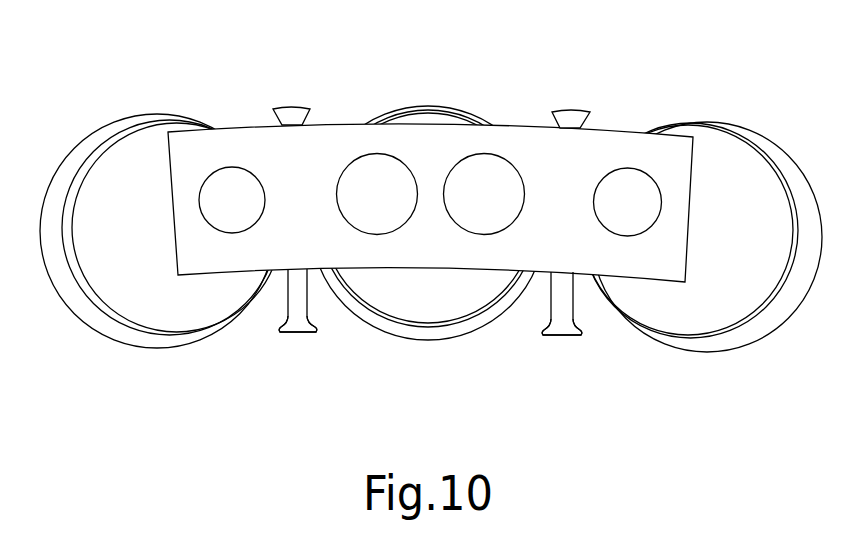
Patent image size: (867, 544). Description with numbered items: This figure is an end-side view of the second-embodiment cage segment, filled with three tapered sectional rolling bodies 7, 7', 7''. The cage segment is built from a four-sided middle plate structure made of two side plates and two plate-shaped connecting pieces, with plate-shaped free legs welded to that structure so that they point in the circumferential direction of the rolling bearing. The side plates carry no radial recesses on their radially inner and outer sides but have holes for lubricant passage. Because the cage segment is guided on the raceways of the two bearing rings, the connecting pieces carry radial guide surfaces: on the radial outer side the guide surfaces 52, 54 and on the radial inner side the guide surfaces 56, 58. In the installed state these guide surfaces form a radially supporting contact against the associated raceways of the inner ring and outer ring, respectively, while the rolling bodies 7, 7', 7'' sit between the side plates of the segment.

The tapered sectional rolling body 7 is at (428, 263).
The tapered sectional rolling body 7' is at (160, 265).
The tapered sectional rolling body 7'' is at (702, 271).
The radial guide surface 52 is at (287, 105).
The radial guide surface 54 is at (568, 110).
The radial guide surface 56 is at (293, 333).
The radial guide surface 58 is at (562, 337).